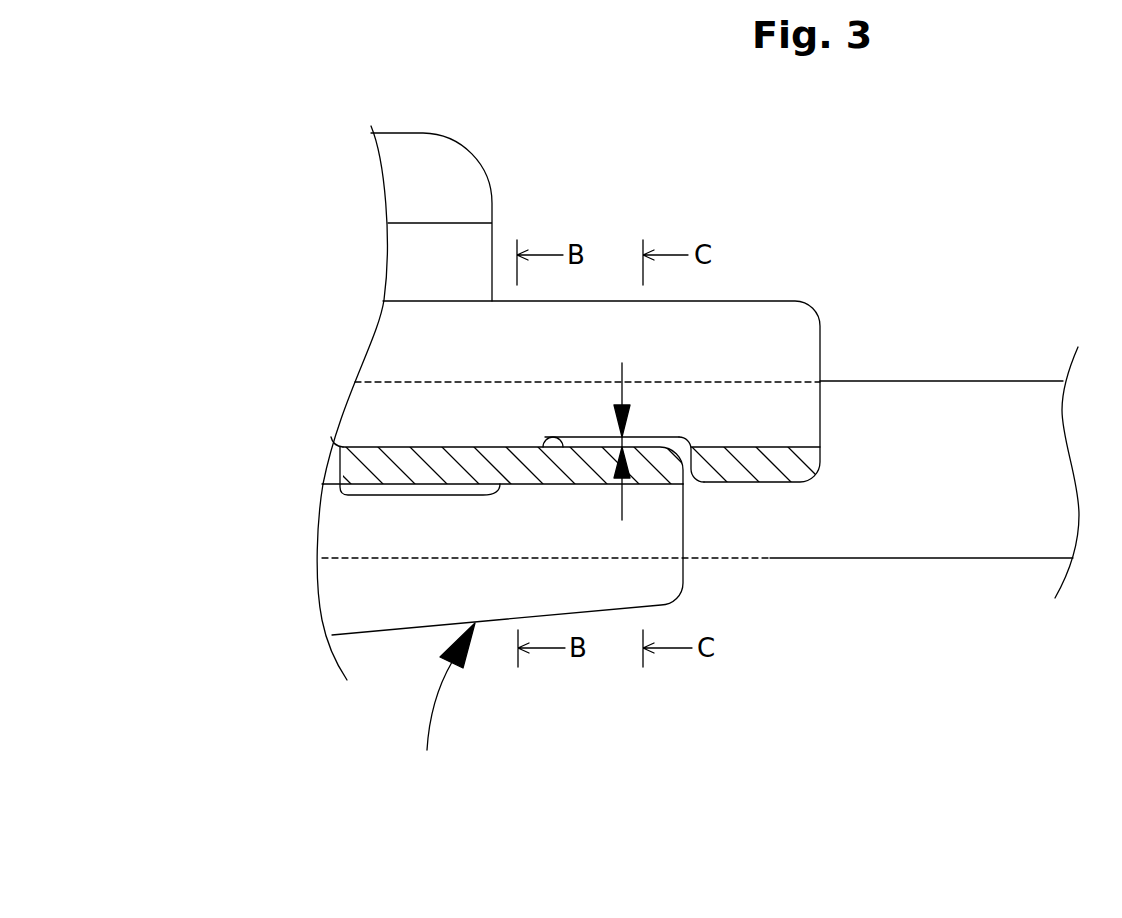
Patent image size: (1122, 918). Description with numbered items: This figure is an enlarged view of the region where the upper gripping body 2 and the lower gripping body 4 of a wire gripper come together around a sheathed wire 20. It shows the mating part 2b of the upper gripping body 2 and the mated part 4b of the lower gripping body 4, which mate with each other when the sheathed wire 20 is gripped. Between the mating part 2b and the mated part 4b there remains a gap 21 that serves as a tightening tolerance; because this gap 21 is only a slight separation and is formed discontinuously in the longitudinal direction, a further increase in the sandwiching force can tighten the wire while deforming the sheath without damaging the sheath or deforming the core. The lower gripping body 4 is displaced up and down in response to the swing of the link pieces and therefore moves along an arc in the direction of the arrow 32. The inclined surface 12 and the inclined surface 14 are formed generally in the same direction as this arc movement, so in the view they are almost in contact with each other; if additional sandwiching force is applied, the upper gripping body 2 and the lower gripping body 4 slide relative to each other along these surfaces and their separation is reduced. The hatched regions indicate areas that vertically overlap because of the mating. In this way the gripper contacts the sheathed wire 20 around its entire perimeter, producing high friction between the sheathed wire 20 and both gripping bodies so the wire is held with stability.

The upper gripping body 2 is at (817, 348).
The mating part 2b is at (584, 438).
The lower gripping body 4 is at (684, 528).
The mated part 4b is at (407, 498).
The inclined surface 12 is at (560, 436).
The inclined surface 14 is at (500, 484).
The sheathed wire 20 is at (970, 397).
The gap 21 is at (622, 438).
The arrow 32 is at (440, 702).